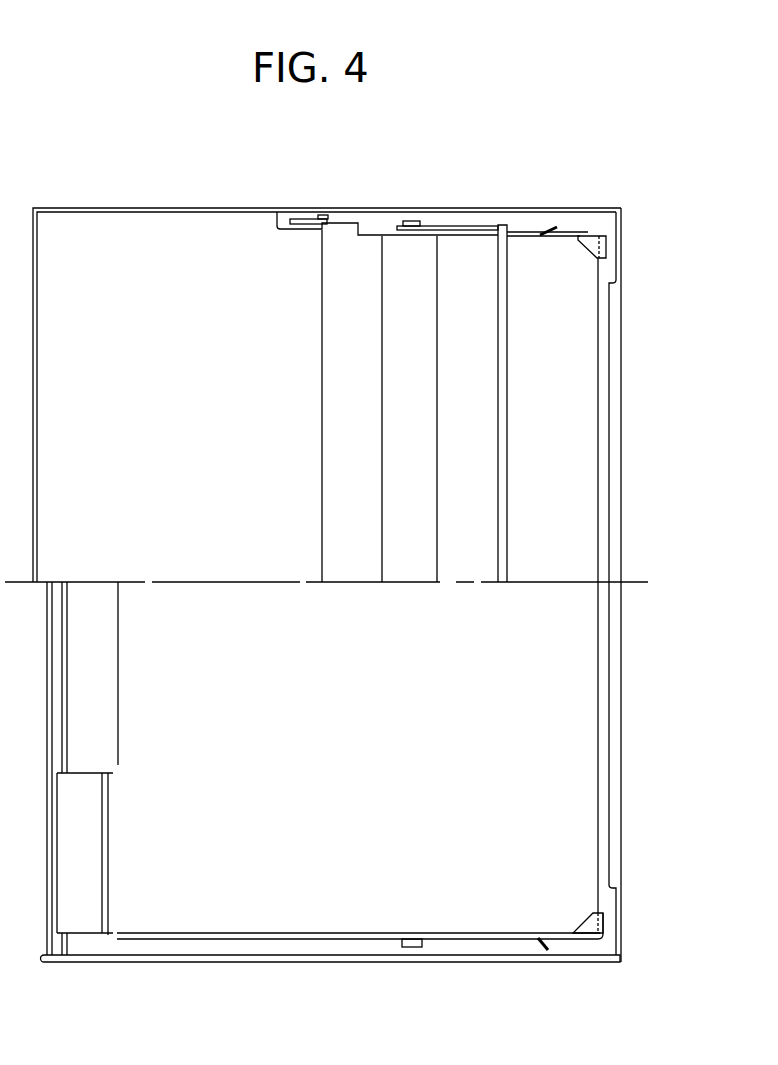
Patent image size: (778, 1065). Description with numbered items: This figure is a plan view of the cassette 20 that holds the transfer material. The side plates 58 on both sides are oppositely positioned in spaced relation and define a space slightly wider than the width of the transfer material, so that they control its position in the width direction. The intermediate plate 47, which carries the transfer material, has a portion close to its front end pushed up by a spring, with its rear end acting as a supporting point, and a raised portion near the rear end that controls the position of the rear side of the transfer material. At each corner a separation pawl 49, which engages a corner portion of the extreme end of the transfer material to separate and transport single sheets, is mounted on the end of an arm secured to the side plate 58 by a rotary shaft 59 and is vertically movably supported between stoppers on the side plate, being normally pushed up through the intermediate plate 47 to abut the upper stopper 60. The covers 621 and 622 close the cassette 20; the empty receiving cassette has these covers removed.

The cassette 20 is at (100, 962).
The intermediate plate 47 is at (585, 672).
The separation pawl 49 is at (598, 250).
The side plate 58 is at (527, 232).
The rotary shaft 59 is at (409, 222).
The upper stopper 60 is at (553, 230).
The cover 621 is at (341, 245).
The cover 622 is at (165, 232).